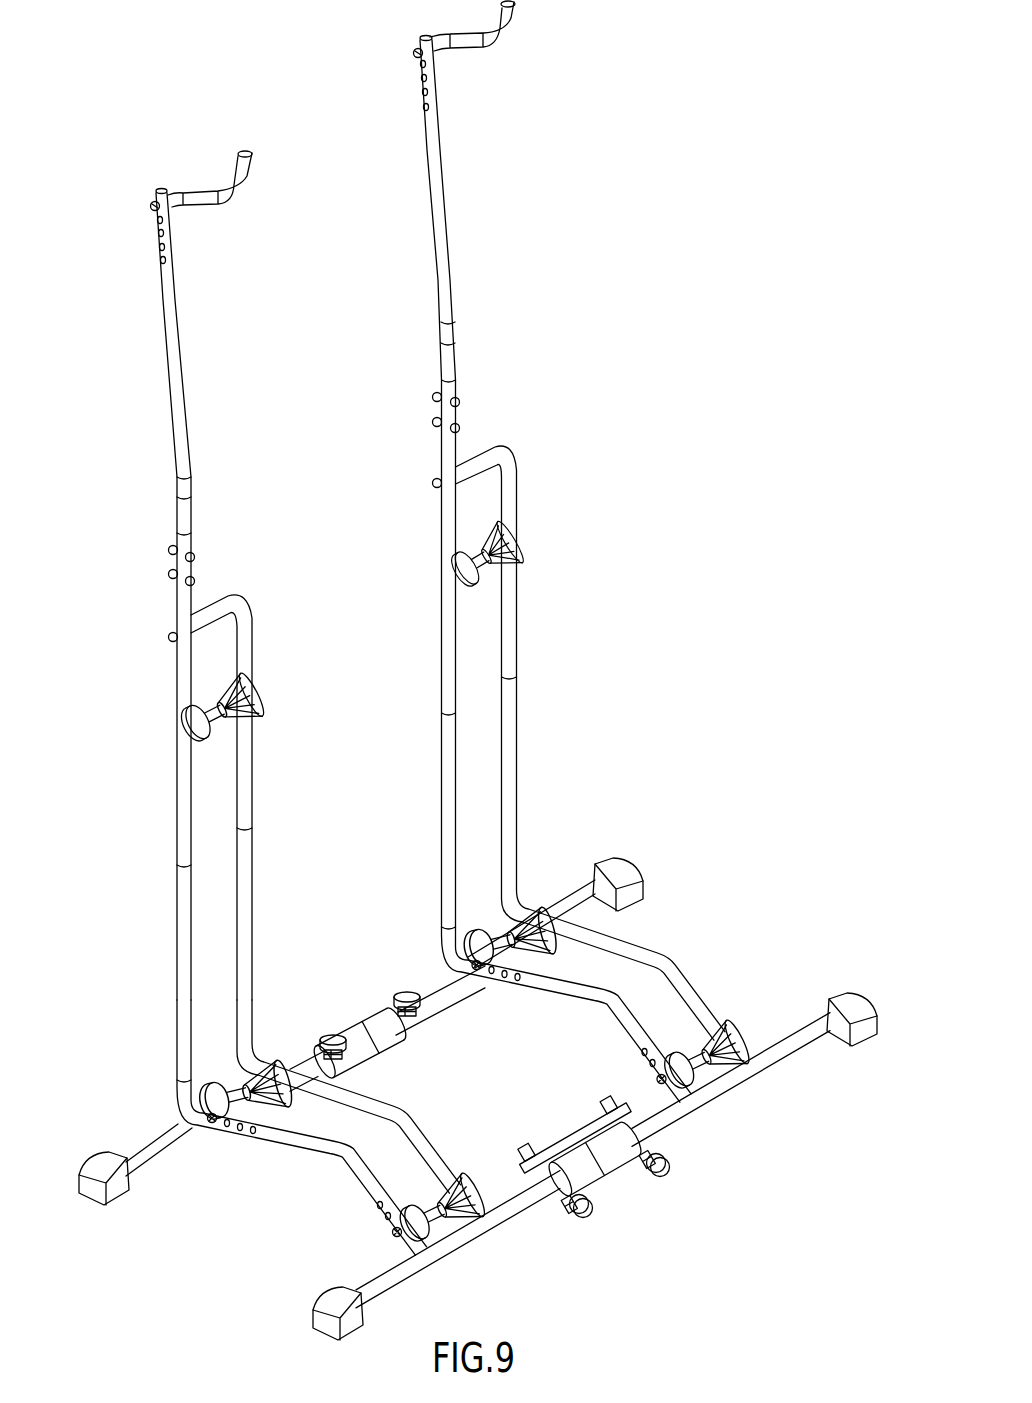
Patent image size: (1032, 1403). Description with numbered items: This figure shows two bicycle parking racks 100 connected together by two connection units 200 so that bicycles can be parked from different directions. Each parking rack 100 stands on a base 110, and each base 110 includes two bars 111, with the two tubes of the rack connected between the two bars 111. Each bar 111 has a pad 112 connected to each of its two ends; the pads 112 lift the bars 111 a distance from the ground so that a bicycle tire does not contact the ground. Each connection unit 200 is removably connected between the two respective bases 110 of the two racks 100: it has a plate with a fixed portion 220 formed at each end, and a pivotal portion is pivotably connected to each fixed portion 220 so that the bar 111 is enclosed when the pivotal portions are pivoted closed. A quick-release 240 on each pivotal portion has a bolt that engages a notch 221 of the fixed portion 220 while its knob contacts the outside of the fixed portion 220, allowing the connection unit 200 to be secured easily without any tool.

The parking rack 100 is at (255, 592).
The base 110 is at (745, 1098).
The bar 111 is at (803, 1038).
The pad 112 is at (595, 1187).
The connection unit 200 is at (344, 1000).
The fixed portion 220 is at (628, 1112).
The notch 221 is at (537, 1140).
The quick-release 240 is at (582, 1222).